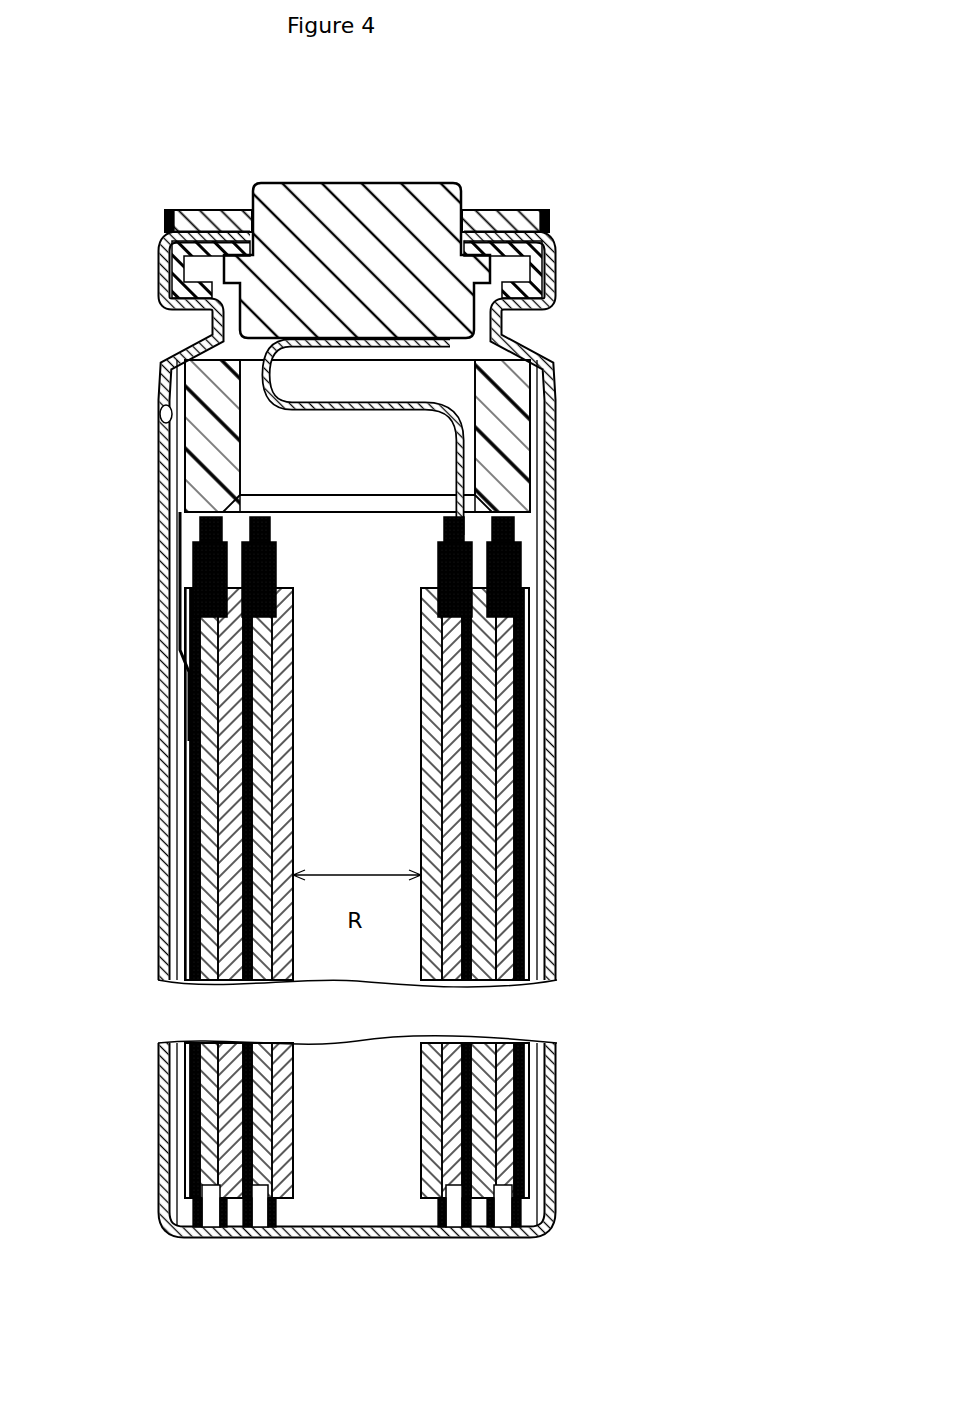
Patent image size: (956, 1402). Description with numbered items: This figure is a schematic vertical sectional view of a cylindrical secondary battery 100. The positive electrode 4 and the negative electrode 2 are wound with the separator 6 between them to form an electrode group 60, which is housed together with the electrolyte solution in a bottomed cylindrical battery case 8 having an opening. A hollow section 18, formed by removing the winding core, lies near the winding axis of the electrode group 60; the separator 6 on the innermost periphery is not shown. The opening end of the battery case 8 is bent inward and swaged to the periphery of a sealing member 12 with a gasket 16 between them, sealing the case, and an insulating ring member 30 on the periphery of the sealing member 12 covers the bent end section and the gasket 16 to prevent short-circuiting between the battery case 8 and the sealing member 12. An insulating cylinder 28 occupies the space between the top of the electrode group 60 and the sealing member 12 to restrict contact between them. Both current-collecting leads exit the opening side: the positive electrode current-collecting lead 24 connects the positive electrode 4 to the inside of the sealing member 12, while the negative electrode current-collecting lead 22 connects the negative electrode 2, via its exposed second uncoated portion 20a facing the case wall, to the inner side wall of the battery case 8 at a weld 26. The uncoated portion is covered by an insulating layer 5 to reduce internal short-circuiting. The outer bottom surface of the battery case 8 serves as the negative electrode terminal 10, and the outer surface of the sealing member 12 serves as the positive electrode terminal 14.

The cylindrical secondary battery 100 is at (571, 105).
The negative electrode 2 is at (293, 628).
The positive electrode 4 is at (505, 812).
The insulating layer 5 is at (263, 522).
The separator 6 is at (276, 532).
The battery case 8 is at (553, 372).
The negative electrode terminal 10 is at (479, 1251).
The sealing member 12 is at (365, 200).
The positive electrode terminal 14 is at (298, 173).
The gasket 16 is at (554, 266).
The hollow section 18 is at (356, 1218).
The second uncoated portion 20a is at (183, 811).
The negative electrode current-collecting lead 22 is at (163, 468).
The positive electrode current-collecting lead 24 is at (510, 498).
The weld 26 is at (158, 415).
The insulating cylinder 28 is at (535, 455).
The insulating ring member 30 is at (500, 210).
The electrode group 60 is at (630, 567).